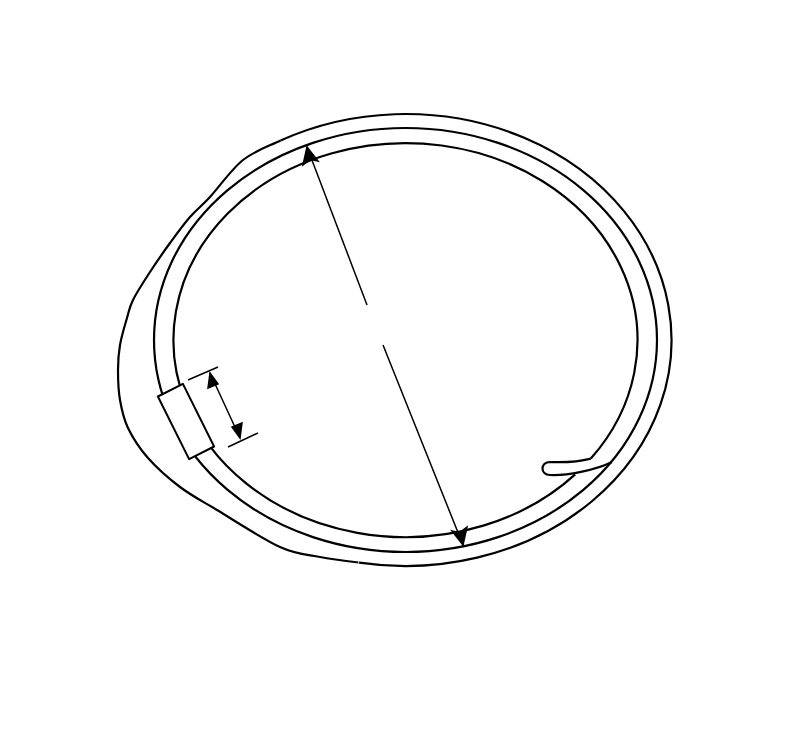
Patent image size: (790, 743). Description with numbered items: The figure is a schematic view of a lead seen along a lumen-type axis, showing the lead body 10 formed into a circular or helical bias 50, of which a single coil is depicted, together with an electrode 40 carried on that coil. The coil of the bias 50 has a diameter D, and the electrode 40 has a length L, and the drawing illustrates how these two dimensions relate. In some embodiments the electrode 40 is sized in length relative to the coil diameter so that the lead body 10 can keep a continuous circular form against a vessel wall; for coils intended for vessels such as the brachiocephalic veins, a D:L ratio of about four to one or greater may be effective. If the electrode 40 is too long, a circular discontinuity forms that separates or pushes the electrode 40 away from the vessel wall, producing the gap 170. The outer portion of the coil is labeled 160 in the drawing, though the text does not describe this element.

The lead body 10 is at (633, 267).
The electrode 40 is at (188, 427).
The bias 50 is at (152, 83).
The outer band portion 160 is at (127, 318).
The gap 170 is at (138, 414).